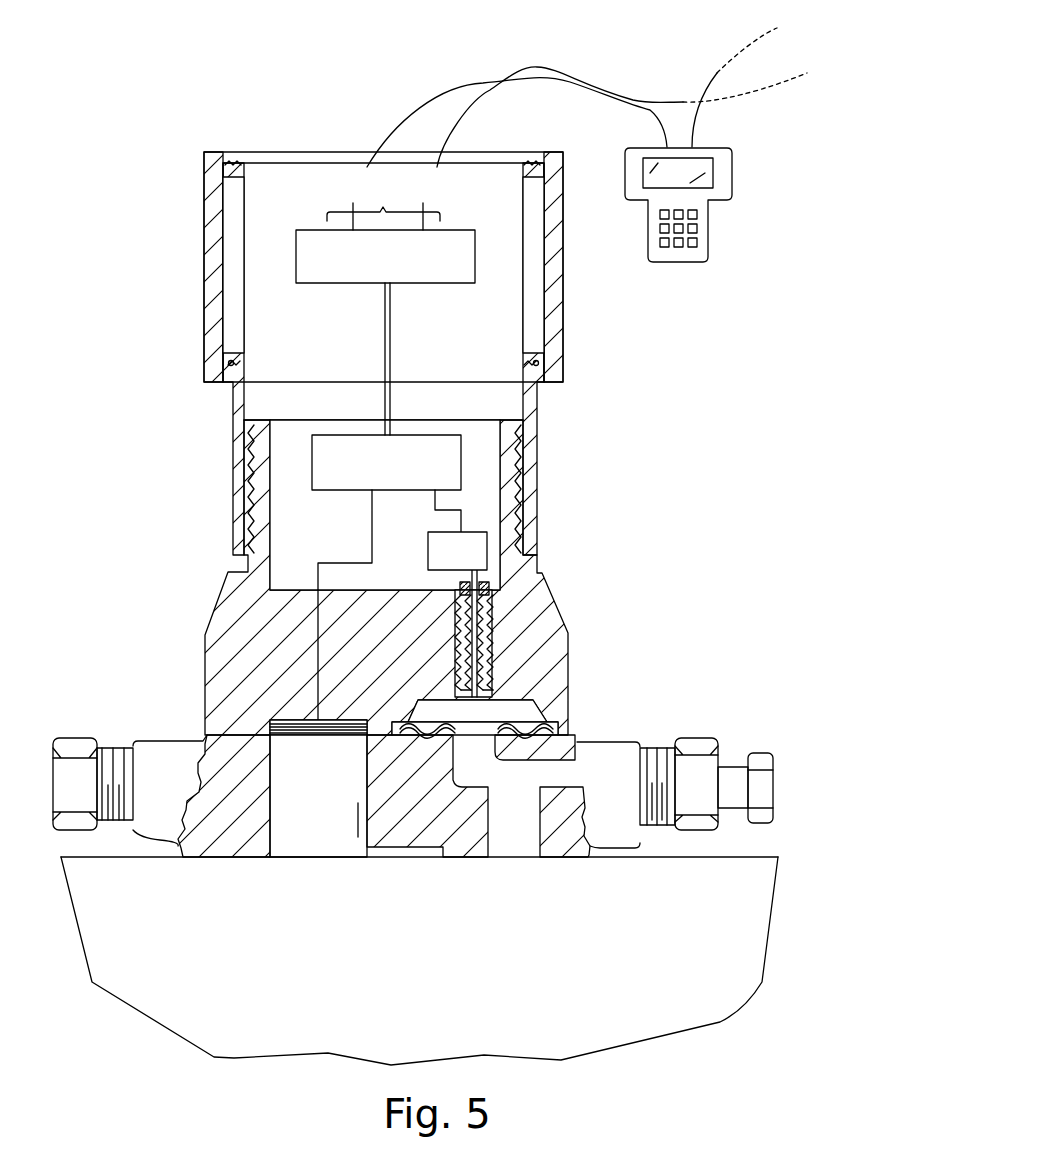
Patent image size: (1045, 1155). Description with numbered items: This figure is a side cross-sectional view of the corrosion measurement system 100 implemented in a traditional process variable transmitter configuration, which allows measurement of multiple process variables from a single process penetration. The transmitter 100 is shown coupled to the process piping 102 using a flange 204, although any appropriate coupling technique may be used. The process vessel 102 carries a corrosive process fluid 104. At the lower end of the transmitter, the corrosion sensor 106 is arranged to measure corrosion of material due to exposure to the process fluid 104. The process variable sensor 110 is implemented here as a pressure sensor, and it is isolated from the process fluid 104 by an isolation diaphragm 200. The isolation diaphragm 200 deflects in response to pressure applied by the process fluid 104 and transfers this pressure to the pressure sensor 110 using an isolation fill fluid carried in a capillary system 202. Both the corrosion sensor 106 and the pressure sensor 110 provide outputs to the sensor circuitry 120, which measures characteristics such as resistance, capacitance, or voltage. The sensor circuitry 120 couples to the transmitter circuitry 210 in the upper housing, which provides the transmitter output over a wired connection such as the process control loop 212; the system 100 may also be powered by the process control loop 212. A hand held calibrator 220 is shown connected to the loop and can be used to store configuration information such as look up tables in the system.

The corrosion measurement system 100 is at (164, 303).
The process vessel 102 is at (743, 857).
The process fluid 104 is at (451, 961).
The corrosion sensor 106 is at (287, 718).
The process variable sensor 110 is at (467, 549).
The sensor circuitry 120 is at (462, 455).
The isolation diaphragm 200 is at (490, 713).
The capillary system 202 is at (470, 640).
The flange 204 is at (167, 770).
The transmitter circuitry 210 is at (332, 284).
The process control loop 212 is at (512, 72).
The hand held calibrator 220 is at (712, 217).